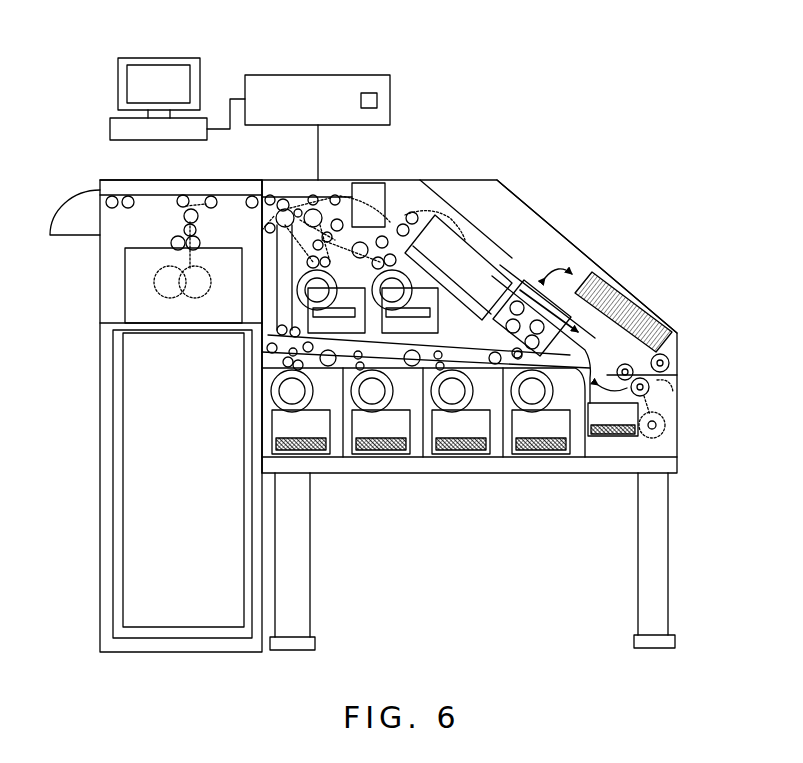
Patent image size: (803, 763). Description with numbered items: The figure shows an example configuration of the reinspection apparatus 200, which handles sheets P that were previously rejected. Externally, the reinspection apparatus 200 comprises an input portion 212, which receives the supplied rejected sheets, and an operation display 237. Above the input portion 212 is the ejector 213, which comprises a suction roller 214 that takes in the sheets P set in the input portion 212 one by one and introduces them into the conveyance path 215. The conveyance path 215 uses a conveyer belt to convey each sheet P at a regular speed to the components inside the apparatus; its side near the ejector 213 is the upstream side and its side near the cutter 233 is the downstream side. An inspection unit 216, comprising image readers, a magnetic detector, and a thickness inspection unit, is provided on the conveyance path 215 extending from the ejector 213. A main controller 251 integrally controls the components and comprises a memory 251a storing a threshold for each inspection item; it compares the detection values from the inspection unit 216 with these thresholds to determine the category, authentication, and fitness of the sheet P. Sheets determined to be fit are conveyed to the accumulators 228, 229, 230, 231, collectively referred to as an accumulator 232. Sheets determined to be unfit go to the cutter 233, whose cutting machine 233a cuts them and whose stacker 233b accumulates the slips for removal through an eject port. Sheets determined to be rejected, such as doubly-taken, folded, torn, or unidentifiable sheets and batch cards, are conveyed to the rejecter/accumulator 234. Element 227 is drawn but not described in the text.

The operation display 237 is at (160, 57).
The main controller 251 is at (318, 73).
The memory 251a is at (378, 100).
The reinspection apparatus 200 is at (456, 142).
The rejecter/accumulator 234 is at (82, 199).
The cutter 233 is at (98, 326).
The cutting machine 233a is at (125, 270).
The stacker 233b is at (113, 380).
The accumulator 232 is at (446, 538).
The accumulator 231 is at (310, 458).
The accumulator 230 is at (378, 458).
The accumulator 229 is at (454, 458).
The accumulator 228 is at (534, 458).
The waste toner container 227 is at (608, 440).
The input portion 212 is at (524, 204).
The inspection unit 216 is at (448, 242).
The conveyance path 215 is at (556, 352).
The ejector 213 is at (672, 358).
The suction roller 214 is at (672, 398).
The sheet P is at (636, 298).